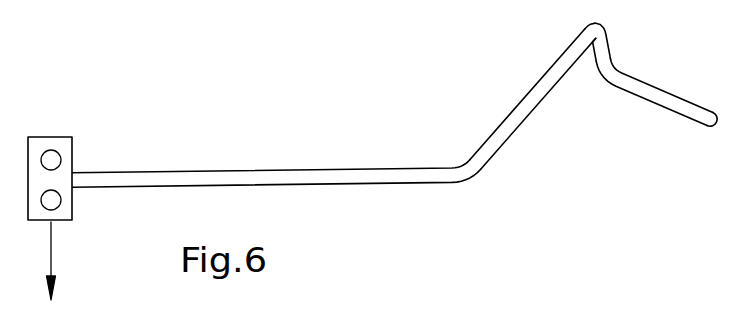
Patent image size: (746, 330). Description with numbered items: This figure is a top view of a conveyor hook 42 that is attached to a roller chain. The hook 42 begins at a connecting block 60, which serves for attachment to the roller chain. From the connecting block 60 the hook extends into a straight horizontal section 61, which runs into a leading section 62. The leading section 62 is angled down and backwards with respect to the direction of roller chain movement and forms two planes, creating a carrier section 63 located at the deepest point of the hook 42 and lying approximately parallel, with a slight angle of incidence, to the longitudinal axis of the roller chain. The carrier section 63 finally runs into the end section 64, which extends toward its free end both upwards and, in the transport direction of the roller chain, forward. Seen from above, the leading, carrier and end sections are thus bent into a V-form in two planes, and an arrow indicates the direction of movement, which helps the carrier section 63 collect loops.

The hook 42 is at (362, 256).
The connecting block 60 is at (64, 143).
The straight horizontal section 61 is at (330, 174).
The leading section 62 is at (512, 126).
The carrier section 63 is at (606, 50).
The end section 64 is at (670, 107).